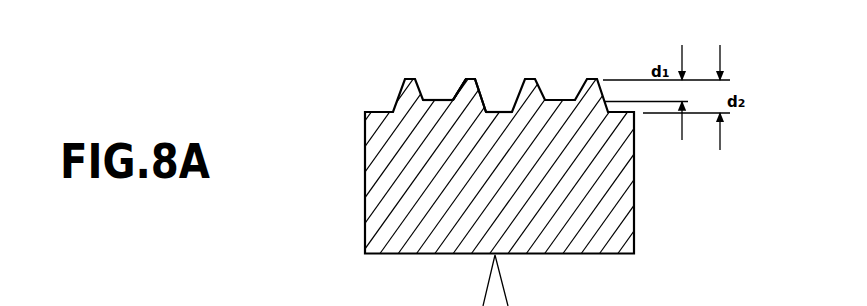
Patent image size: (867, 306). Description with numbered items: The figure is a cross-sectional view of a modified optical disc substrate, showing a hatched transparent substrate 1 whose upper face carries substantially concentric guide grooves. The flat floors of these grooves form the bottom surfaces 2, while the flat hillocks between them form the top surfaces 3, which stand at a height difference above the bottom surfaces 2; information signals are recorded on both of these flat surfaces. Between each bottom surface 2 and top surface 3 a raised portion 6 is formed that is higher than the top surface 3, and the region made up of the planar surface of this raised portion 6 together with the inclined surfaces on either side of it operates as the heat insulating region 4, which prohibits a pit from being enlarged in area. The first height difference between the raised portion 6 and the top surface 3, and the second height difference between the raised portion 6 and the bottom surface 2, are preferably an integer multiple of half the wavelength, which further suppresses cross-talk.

The transparent substrate 1 is at (617, 205).
The bottom surface 2 is at (497, 110).
The top surface 3 is at (432, 100).
The heat insulating region 4 is at (488, 112).
The raised portion 6 is at (467, 72).